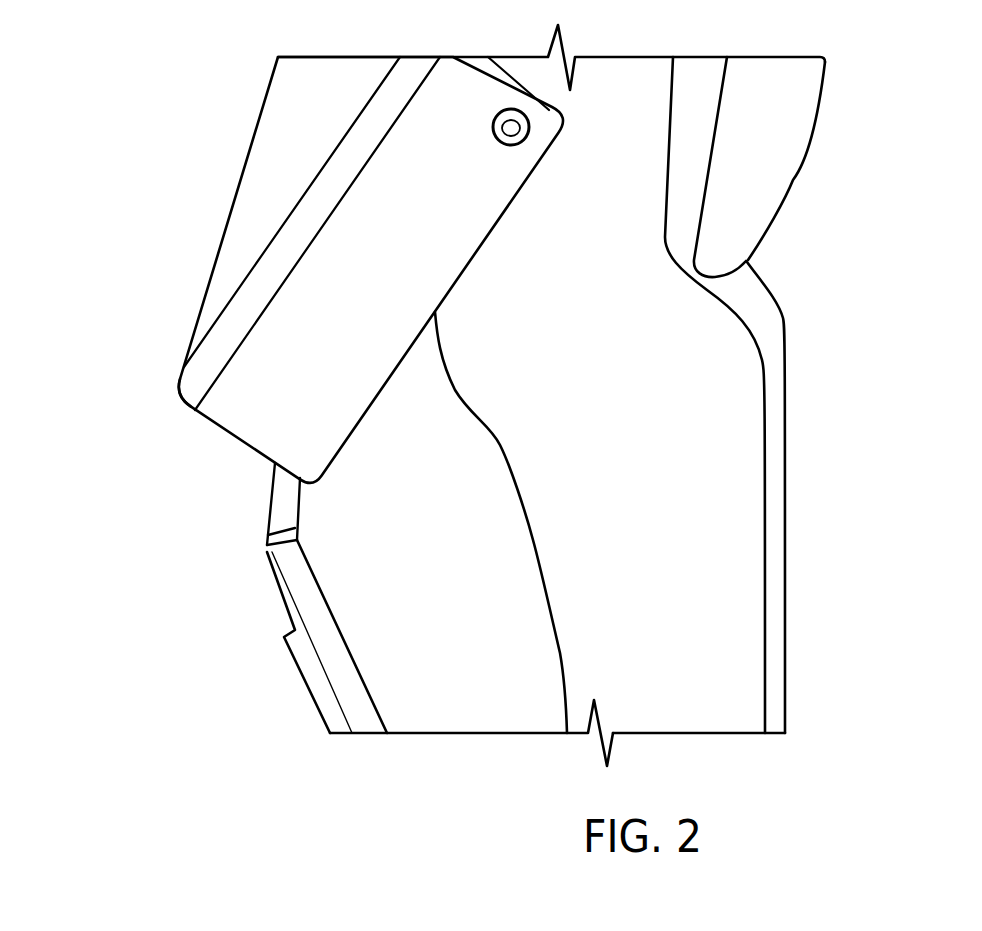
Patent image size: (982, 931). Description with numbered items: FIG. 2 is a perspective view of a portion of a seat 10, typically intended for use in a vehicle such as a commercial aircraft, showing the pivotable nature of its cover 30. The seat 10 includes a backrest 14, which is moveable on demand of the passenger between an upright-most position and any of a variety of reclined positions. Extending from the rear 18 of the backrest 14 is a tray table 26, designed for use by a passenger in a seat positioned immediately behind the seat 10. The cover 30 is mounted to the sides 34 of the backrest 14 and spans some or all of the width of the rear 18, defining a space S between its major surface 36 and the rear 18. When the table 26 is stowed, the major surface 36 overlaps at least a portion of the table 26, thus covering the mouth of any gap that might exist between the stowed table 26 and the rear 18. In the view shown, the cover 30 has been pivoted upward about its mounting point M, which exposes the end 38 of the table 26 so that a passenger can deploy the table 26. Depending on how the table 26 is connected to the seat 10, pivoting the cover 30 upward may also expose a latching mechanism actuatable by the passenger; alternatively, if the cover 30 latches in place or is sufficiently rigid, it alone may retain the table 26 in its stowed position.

The seat 10 is at (888, 360).
The backrest 14 is at (780, 643).
The rear 18 is at (553, 633).
The tray table 26 is at (362, 713).
The cover 30 is at (248, 393).
The sides 34 is at (752, 720).
The major surface 36 is at (290, 153).
The end 38 is at (282, 502).
The mounting point M is at (520, 128).
The space S is at (462, 621).